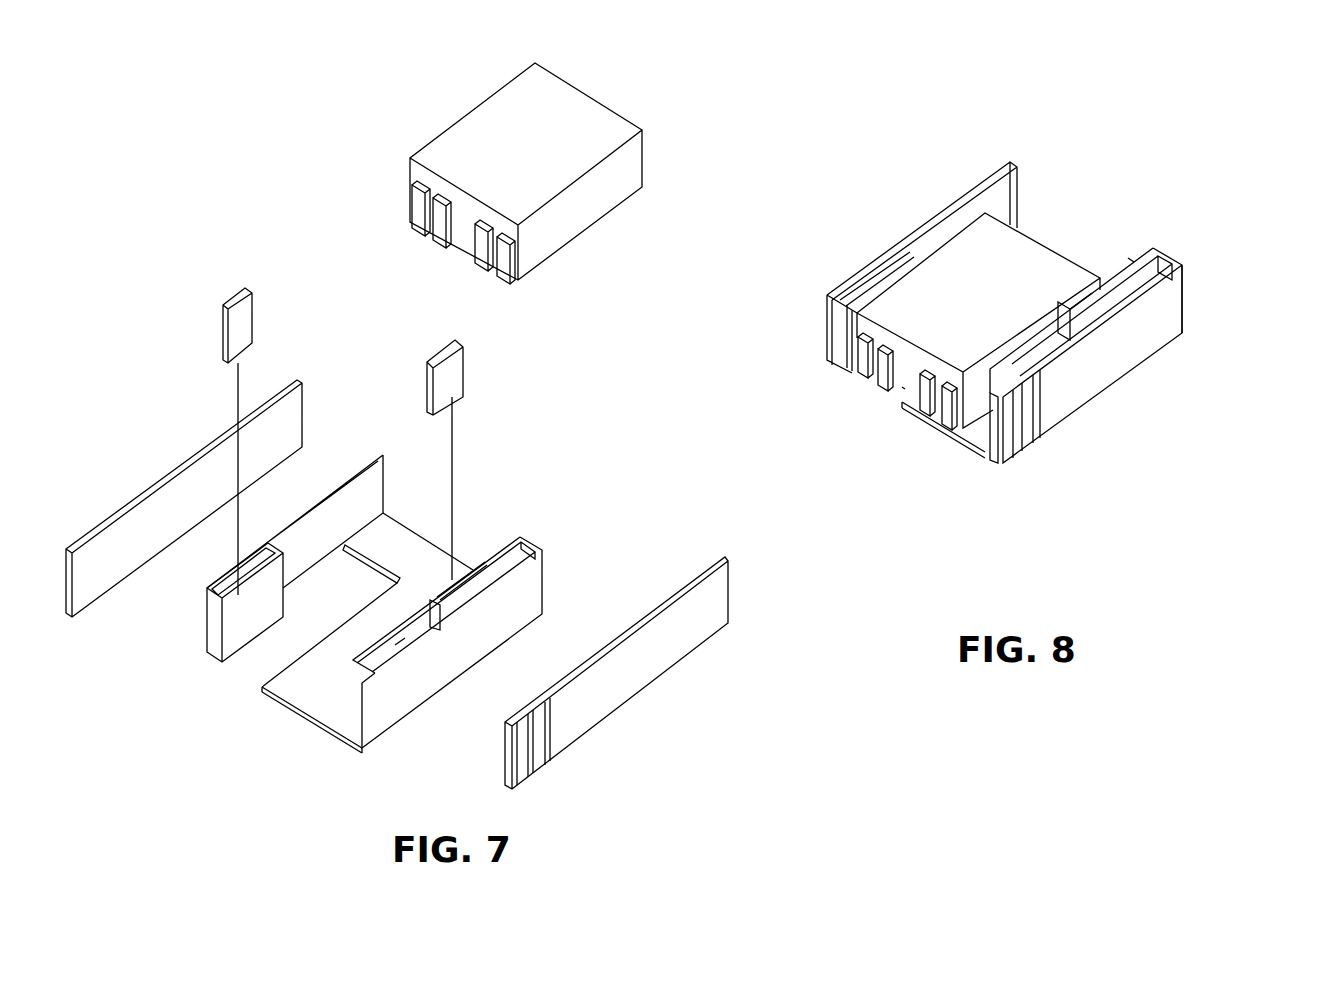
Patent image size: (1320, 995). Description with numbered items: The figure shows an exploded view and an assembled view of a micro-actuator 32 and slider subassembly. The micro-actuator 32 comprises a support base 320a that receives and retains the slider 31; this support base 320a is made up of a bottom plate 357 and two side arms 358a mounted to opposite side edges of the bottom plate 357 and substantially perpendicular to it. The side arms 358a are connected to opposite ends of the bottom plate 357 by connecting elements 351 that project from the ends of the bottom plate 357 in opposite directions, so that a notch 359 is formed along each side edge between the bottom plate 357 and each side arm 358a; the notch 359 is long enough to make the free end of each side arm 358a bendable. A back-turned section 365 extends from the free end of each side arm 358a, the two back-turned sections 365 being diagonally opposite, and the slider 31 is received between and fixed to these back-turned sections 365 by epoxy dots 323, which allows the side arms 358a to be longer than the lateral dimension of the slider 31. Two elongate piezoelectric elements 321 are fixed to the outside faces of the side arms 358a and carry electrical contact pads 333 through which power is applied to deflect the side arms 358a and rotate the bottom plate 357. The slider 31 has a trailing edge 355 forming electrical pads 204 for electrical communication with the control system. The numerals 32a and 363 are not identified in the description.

In FIG. 7, the slider 31 is at (584, 112).
In FIG. 8, the slider 31 is at (1023, 270).
In FIG. 7, the micro-actuator 32 is at (565, 447).
In FIG. 8, the battery holder end portion 32a is at (1187, 297).
In FIG. 7, the electrical pads 204 is at (414, 200).
In FIG. 8, the electrical pads 204 is at (862, 360).
In FIG. 7, the piezoelectric (PZT) elements 321 is at (275, 423).
In FIG. 8, the piezoelectric (PZT) elements 321 is at (843, 287).
In FIG. 7, the epoxy dots 323 is at (238, 317).
In FIG. 8, the epoxy dots 323 is at (1075, 282).
In FIG. 7, the electrical contact pads 333 is at (542, 742).
In FIG. 8, the electrical contact pads 333 is at (1033, 418).
In FIG. 7, the connecting elements 351 is at (383, 548).
In FIG. 8, the trailing edge 355 is at (902, 387).
In FIG. 7, the bottom plate 357 is at (340, 653).
In FIG. 8, the bottom plate 357 is at (937, 430).
In FIG. 7, the side arms 358a is at (367, 493).
In FIG. 8, the side arms 358a is at (1007, 183).
In FIG. 7, the notch 359 is at (405, 638).
In FIG. 7, the receiving channel 363 is at (213, 637).
In FIG. 8, the receiving channel 363 is at (840, 357).
In FIG. 7, the back-turned sections 365 is at (263, 590).
In FIG. 8, the back-turned sections 365 is at (882, 260).
In FIG. 7, the support base 320a is at (298, 717).
In FIG. 8, the support base 320a is at (953, 443).